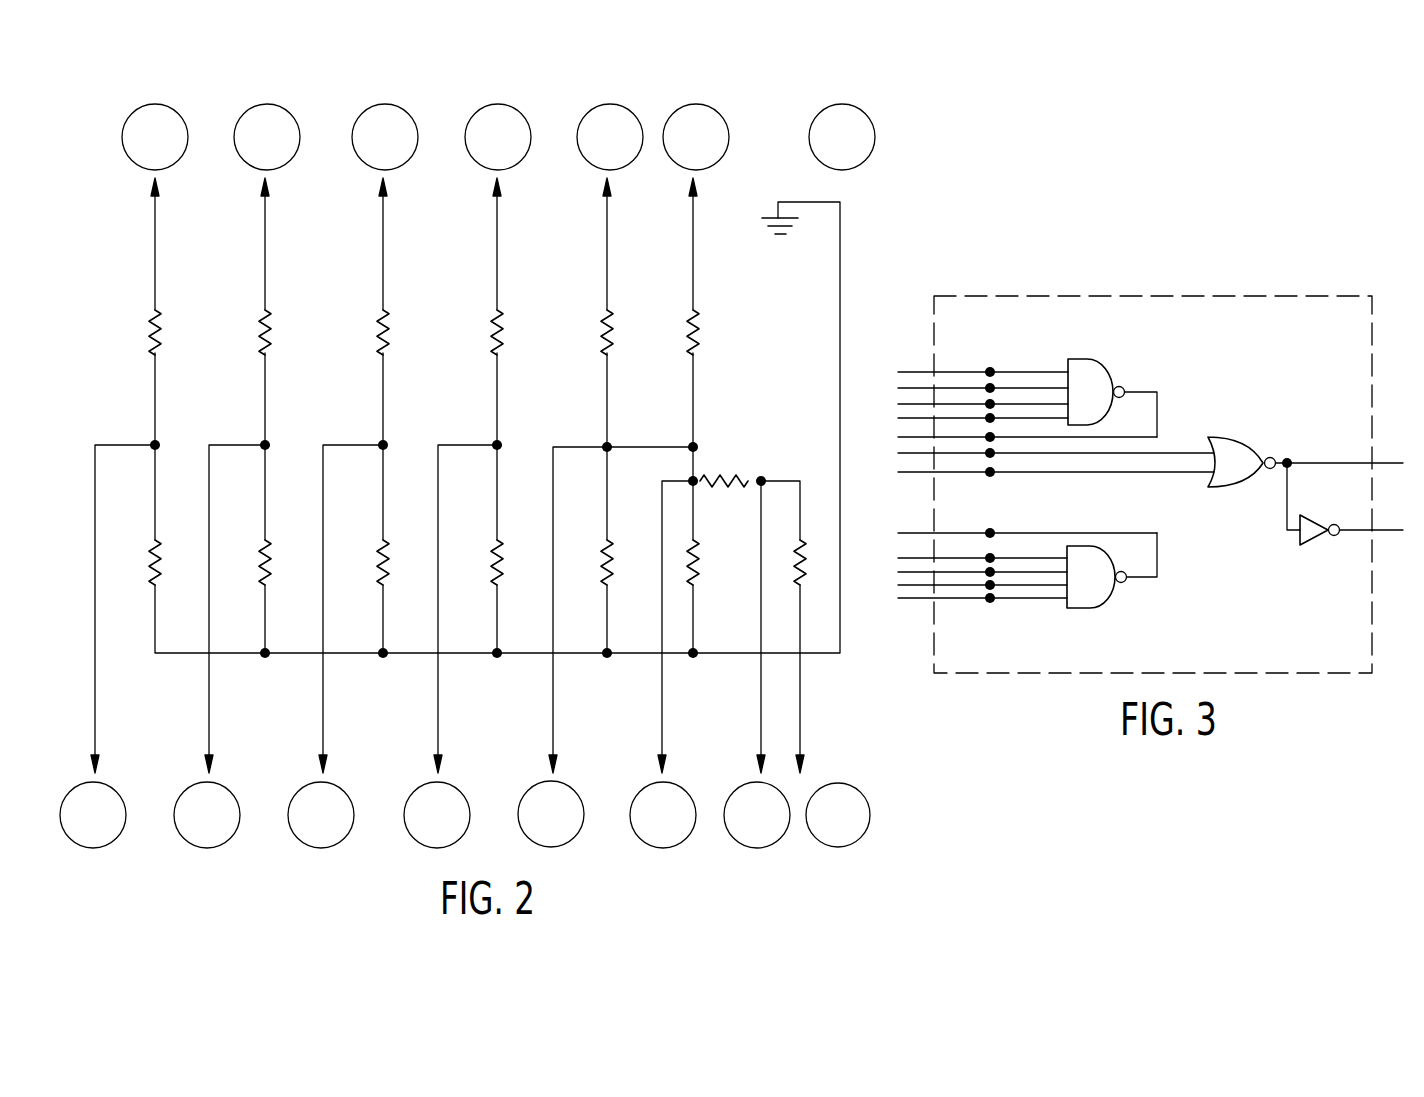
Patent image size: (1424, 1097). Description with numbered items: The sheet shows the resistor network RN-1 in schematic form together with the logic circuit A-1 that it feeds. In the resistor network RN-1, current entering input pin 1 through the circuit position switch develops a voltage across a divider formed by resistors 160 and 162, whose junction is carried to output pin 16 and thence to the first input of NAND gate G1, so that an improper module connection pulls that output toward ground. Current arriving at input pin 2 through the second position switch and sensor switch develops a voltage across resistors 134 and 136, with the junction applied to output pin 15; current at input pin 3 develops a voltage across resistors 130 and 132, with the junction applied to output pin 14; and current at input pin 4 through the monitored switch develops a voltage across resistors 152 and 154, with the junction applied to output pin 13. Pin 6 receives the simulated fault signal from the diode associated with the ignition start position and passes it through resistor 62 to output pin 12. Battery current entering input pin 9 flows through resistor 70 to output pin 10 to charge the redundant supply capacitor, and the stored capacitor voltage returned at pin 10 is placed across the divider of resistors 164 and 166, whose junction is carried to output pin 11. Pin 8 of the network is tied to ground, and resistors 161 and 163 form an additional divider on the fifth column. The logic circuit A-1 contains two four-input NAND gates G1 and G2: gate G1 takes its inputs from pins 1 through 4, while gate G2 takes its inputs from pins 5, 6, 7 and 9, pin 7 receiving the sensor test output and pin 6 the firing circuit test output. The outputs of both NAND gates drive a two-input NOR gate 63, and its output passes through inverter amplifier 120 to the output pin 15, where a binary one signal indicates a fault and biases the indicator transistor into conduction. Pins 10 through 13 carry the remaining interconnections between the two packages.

In FIG. 2, the resistor network RN-1 is at (892, 149).
In FIG. 3, the logic circuit A-1 is at (1177, 262).
In FIG. 2, the resistor 160 is at (150, 323).
In FIG. 2, the resistor 134 is at (260, 334).
In FIG. 2, the resistor 130 is at (378, 335).
In FIG. 2, the resistor 152 is at (492, 334).
In FIG. 2, the resistor 161 is at (604, 338).
In FIG. 2, the resistor 62 is at (690, 330).
In FIG. 2, the resistor 162 is at (158, 552).
In FIG. 2, the resistor 136 is at (268, 557).
In FIG. 2, the resistor 132 is at (387, 563).
In FIG. 2, the resistor 154 is at (500, 557).
In FIG. 2, the resistor 163 is at (610, 552).
In FIG. 2, the resistor 166 is at (696, 557).
In FIG. 2, the resistor 164 is at (732, 478).
In FIG. 2, the resistor 70 is at (802, 560).
In FIG. 3, the NAND gate G1 is at (1107, 366).
In FIG. 3, the NAND gate G2 is at (1100, 606).
In FIG. 3, the NOR gate 63 is at (1250, 445).
In FIG. 3, the inverter amplifier 120 is at (1312, 538).
In FIG. 2, the pin 1 is at (155, 137).
In FIG. 3, the pin 1 is at (983, 365).
In FIG. 2, the pin 2 is at (267, 137).
In FIG. 3, the pin 2 is at (983, 384).
In FIG. 2, the pin 3 is at (385, 137).
In FIG. 3, the pin 3 is at (983, 402).
In FIG. 2, the pin 4 is at (498, 137).
In FIG. 3, the pin 4 is at (983, 424).
In FIG. 2, the pin 5 is at (610, 137).
In FIG. 3, the pin 5 is at (982, 550).
In FIG. 2, the pin 6 is at (696, 137).
In FIG. 3, the pin 6 is at (982, 565).
In FIG. 3, the pin 7 is at (982, 590).
In FIG. 2, the terminal pin 8 is at (842, 137).
In FIG. 2, the pin 9 is at (838, 815).
In FIG. 3, the pin 9 is at (982, 607).
In FIG. 2, the pin 10 is at (757, 815).
In FIG. 3, the pin 10 is at (1027, 525).
In FIG. 2, the pin 11 is at (663, 815).
In FIG. 3, the pin 11 is at (1056, 461).
In FIG. 2, the pin 12 is at (551, 814).
In FIG. 3, the pin 12 is at (1056, 481).
In FIG. 2, the pin 13 is at (437, 815).
In FIG. 3, the pin 13 is at (1027, 444).
In FIG. 2, the pin 14 is at (321, 815).
In FIG. 2, the pin 15 is at (207, 815).
In FIG. 2, the pin 16 is at (93, 815).